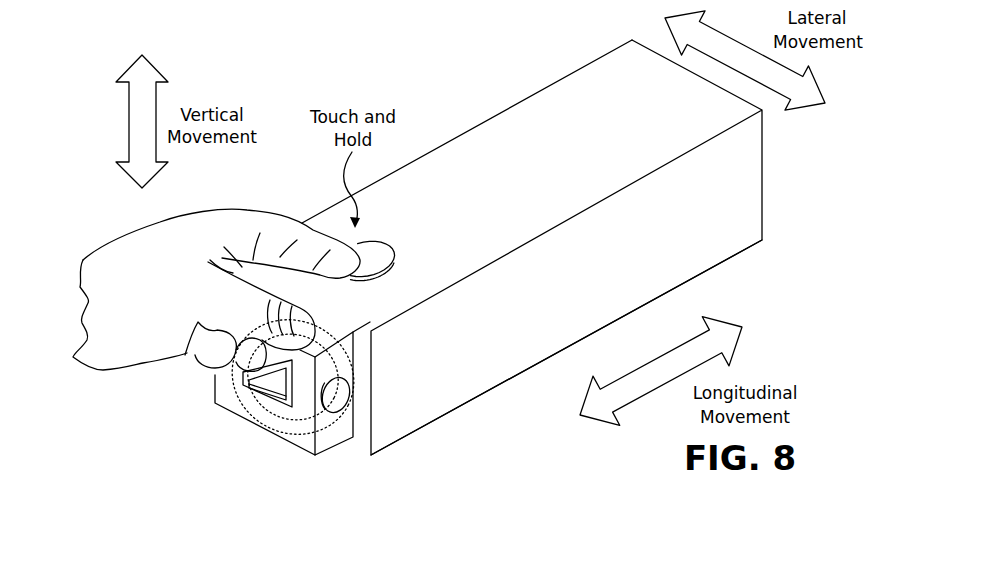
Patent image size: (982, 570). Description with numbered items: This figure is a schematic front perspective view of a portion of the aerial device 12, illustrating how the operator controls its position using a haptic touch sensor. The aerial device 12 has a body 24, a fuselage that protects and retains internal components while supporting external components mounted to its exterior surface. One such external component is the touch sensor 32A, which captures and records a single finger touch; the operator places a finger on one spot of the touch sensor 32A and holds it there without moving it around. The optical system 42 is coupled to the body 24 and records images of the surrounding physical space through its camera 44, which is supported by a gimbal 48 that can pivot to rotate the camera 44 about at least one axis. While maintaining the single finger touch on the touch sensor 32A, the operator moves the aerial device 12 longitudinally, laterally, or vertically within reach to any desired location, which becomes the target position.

The aerial device 12 is at (720, 232).
The body 24 is at (510, 350).
The touch sensor 32A is at (371, 256).
The optical system 42 is at (217, 419).
The camera 44 is at (264, 416).
The gimbal 48 is at (350, 358).